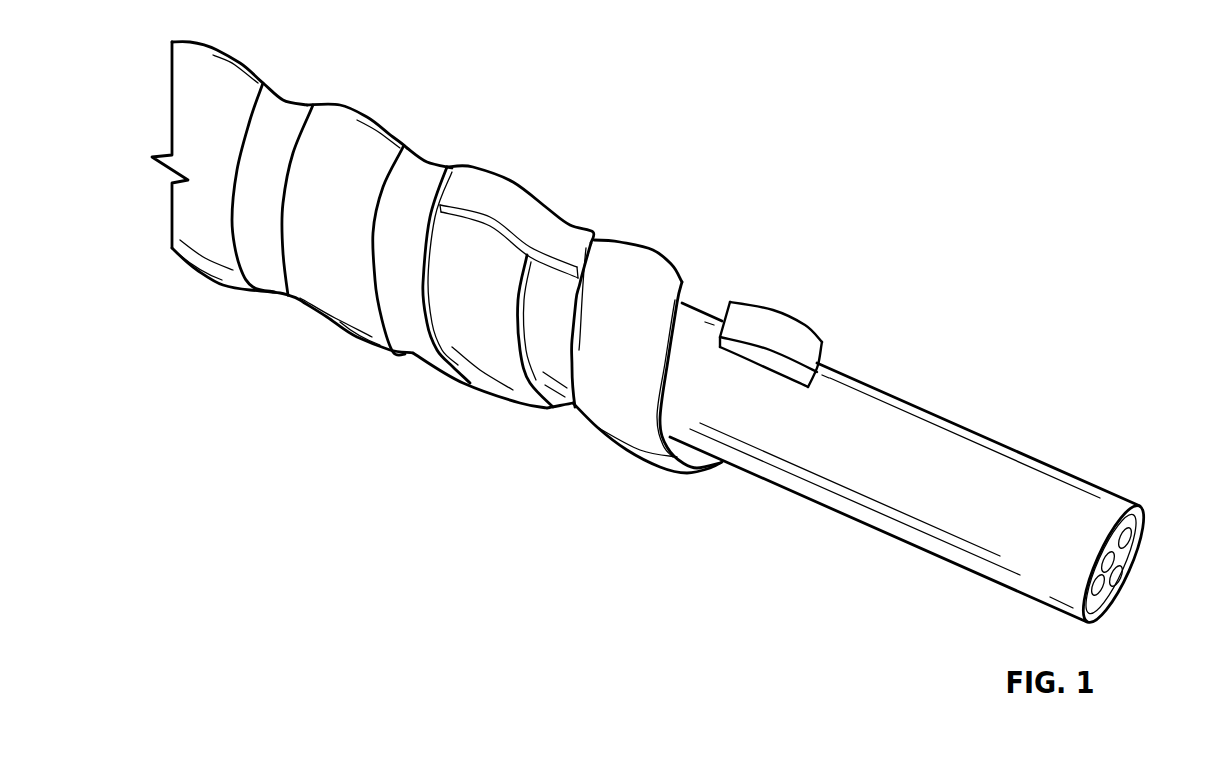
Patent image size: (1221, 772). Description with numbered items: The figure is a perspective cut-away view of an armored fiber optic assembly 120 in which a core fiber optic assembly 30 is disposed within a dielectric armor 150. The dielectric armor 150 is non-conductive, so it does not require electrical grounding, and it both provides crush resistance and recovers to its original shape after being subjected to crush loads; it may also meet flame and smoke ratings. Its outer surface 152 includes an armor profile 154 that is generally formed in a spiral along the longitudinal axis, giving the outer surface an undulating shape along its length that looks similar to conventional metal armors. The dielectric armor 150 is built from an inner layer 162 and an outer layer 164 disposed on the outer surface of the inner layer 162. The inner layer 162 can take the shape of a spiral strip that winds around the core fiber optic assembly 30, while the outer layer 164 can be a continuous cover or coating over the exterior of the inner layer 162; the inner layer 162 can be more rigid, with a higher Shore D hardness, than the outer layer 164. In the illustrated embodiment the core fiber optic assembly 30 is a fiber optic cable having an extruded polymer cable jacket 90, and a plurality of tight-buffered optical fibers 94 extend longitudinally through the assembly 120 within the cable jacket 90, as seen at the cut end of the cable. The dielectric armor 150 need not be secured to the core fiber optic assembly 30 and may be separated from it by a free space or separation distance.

The armored fiber optic assembly 120 is at (560, 100).
The dielectric armor 150 is at (588, 307).
The outer surface 152 is at (480, 380).
The armor profile 154 is at (345, 305).
The inner layer 162 is at (653, 263).
The outer layer 164 is at (562, 212).
The core fiber optic assembly 30 is at (932, 480).
The cable jacket 90 is at (888, 508).
The tight-buffered optical fibers 94 is at (1130, 547).